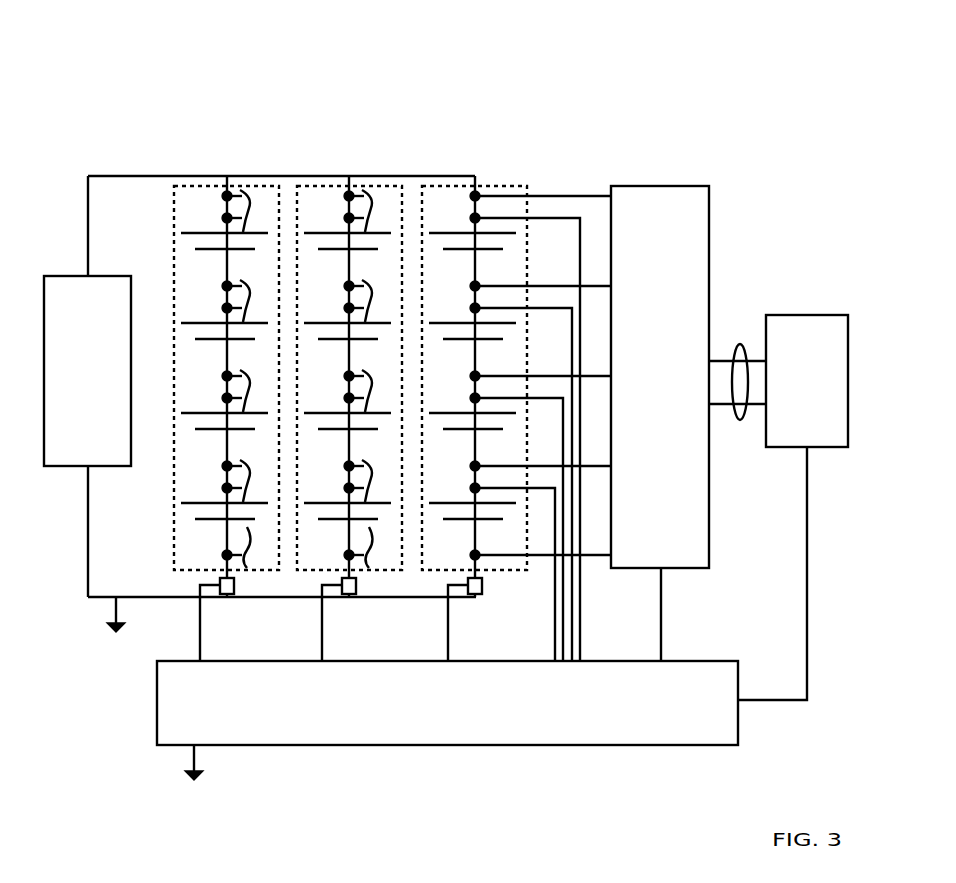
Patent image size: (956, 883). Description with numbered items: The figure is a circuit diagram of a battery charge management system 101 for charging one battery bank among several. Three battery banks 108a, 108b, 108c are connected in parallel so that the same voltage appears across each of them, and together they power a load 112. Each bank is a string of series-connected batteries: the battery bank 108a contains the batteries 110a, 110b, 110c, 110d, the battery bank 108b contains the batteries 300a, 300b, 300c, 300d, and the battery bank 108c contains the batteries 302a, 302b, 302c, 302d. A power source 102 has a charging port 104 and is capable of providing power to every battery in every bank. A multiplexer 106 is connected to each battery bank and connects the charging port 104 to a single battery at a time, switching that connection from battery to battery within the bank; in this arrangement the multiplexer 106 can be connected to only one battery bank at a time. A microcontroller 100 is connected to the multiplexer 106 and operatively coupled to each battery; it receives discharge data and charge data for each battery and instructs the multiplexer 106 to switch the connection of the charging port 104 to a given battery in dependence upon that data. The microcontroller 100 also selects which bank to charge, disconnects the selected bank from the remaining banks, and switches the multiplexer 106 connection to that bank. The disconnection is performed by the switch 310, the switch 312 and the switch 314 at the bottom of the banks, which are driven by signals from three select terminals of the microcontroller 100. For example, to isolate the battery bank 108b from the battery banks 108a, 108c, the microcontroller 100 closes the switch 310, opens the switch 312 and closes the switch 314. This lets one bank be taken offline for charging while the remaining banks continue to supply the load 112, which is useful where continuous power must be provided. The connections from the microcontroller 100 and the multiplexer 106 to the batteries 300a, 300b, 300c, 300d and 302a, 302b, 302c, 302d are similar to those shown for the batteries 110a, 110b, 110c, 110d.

The battery charge management system 101 is at (627, 82).
The microcontroller 100 is at (521, 713).
The power source 102 is at (820, 415).
The charging port 104 is at (742, 345).
The multiplexer 106 is at (672, 398).
The battery bank 108a is at (435, 186).
The battery bank 108b is at (310, 186).
The battery bank 108c is at (186, 186).
The battery 110a is at (466, 229).
The battery 110b is at (466, 319).
The battery 110c is at (466, 409).
The battery 110d is at (466, 499).
The load 112 is at (103, 392).
The battery 300a is at (340, 229).
The battery 300b is at (340, 319).
The battery 300c is at (340, 409).
The battery 300d is at (340, 499).
The battery 302a is at (216, 229).
The battery 302b is at (216, 319).
The battery 302c is at (216, 409).
The battery 302d is at (216, 499).
The switch 310 is at (268, 596).
The switch 312 is at (392, 596).
The switch 314 is at (516, 596).